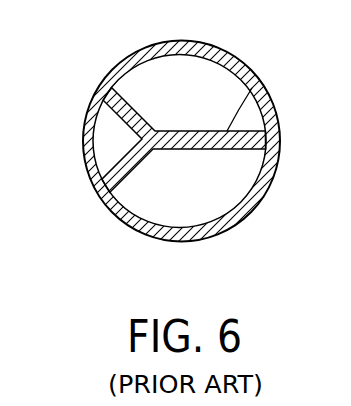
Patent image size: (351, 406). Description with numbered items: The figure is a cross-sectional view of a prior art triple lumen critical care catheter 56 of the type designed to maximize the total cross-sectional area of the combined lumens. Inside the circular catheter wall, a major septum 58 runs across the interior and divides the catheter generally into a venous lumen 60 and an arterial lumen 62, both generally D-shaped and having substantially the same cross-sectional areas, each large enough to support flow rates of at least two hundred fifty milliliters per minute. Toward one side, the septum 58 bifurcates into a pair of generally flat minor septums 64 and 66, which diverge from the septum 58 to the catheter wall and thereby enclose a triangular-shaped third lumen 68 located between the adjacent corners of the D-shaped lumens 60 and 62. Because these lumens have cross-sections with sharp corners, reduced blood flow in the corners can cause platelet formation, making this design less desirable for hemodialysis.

The triple lumen critical care catheter 56 is at (175, 232).
The major septum 58 is at (255, 74).
The venous lumen 60 is at (200, 83).
The arterial lumen 62 is at (212, 172).
The minor septum 64 is at (130, 104).
The minor septum 66 is at (121, 173).
The third lumen 68 is at (113, 145).